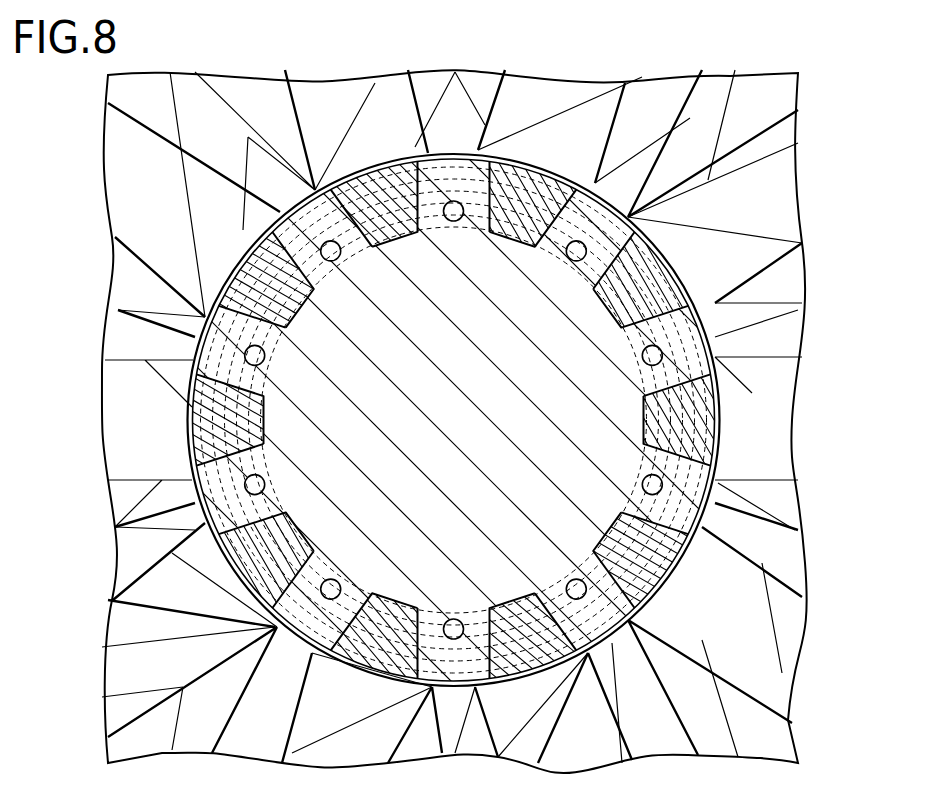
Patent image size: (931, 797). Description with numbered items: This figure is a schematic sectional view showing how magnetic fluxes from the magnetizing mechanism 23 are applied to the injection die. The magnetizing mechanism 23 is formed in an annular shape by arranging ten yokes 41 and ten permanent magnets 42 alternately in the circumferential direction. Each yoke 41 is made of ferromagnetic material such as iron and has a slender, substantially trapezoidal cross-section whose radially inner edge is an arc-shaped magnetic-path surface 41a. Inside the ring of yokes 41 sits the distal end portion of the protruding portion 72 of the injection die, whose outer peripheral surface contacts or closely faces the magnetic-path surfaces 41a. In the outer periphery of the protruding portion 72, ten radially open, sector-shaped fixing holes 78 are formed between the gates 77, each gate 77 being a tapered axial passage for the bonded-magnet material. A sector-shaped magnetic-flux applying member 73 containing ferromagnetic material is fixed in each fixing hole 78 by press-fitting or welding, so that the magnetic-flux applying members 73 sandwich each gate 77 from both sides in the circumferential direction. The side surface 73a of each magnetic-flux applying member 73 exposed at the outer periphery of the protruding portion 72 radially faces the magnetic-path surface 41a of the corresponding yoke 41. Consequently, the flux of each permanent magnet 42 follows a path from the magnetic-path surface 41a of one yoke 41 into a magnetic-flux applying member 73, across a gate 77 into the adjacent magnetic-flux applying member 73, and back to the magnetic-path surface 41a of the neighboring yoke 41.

The magnetizing mechanism 23 is at (798, 100).
The yoke 41 is at (105, 186).
The magnetic-path surface 41a is at (252, 271).
The permanent magnet 42 is at (112, 290).
The protruding portion 72 is at (672, 258).
The magnetic-flux applying member 73 is at (419, 238).
The side surface 73a is at (228, 273).
The gate 77 is at (577, 263).
The fixing hole 78 is at (392, 235).